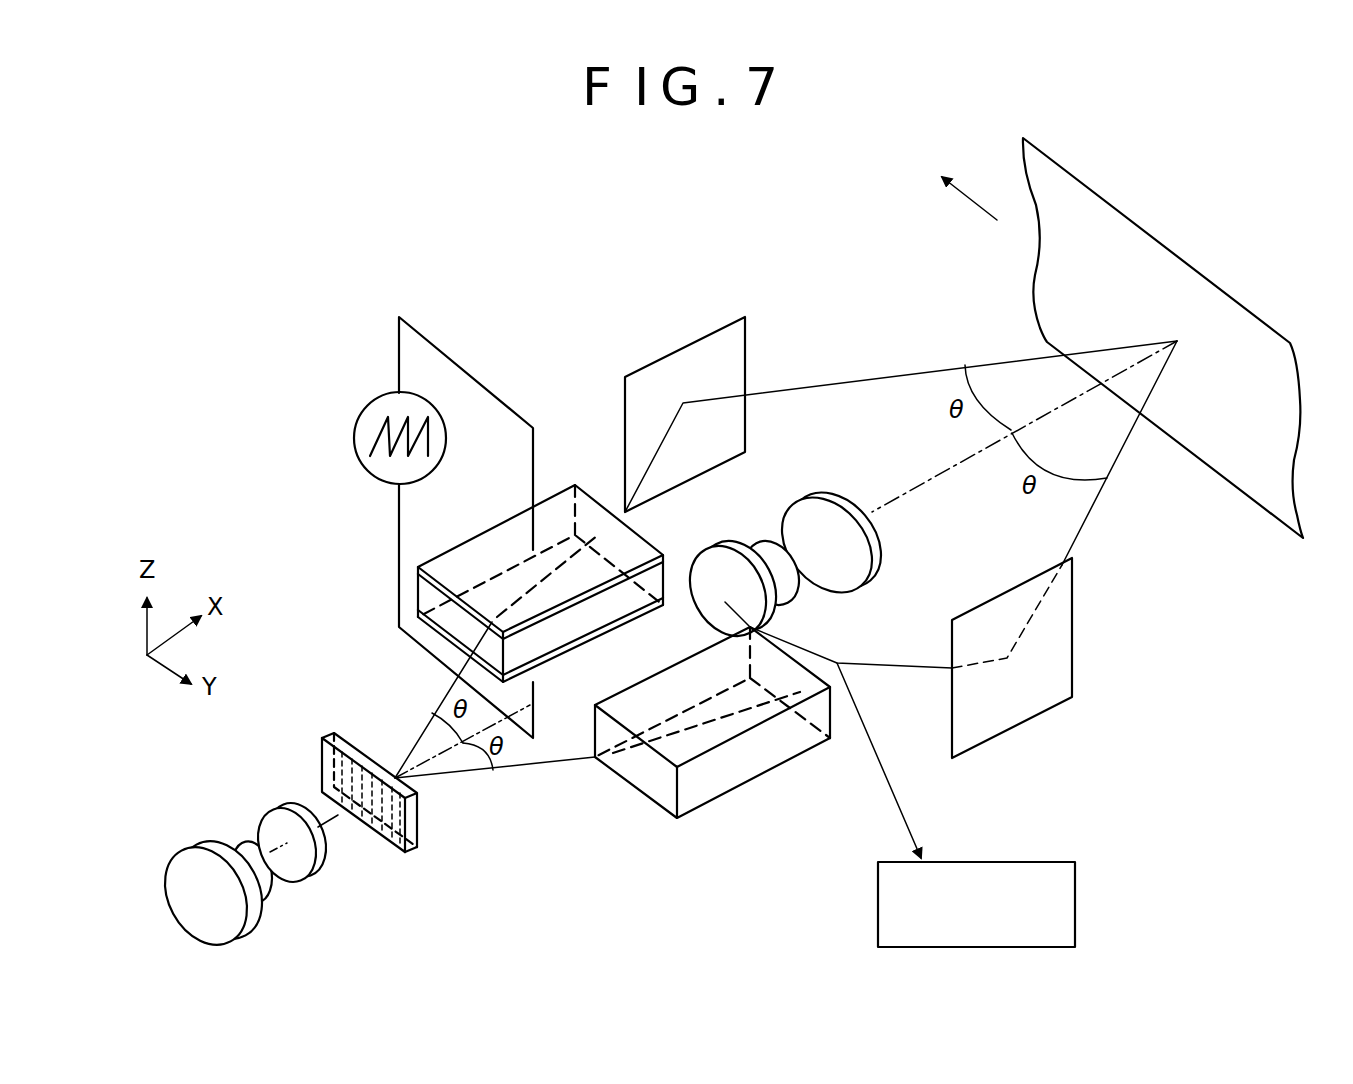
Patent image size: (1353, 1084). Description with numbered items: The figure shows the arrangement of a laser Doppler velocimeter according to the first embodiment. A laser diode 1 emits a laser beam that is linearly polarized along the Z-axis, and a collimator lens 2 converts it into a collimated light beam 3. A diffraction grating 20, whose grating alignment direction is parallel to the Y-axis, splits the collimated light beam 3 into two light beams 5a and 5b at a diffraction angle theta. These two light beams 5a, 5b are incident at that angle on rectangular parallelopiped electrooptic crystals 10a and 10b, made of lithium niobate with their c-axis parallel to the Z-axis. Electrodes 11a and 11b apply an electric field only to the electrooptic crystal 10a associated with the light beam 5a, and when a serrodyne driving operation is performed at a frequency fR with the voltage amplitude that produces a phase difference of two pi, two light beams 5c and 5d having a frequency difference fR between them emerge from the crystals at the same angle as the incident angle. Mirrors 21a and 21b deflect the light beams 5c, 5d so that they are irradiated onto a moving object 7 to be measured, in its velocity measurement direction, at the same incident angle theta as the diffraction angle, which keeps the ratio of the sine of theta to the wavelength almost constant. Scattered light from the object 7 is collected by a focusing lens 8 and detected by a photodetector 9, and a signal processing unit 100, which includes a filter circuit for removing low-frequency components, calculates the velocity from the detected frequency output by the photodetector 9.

The laser diode 1 is at (188, 867).
The collimator lens 2 is at (303, 858).
The collimated light beam 3 is at (327, 815).
The diffraction grating 20 is at (413, 827).
The light beam 5a is at (413, 731).
The light beam 5b is at (517, 773).
The light beam 5c is at (644, 469).
The light beam 5d is at (882, 683).
The electrooptic crystal 10a is at (445, 617).
The electrode 11a is at (420, 568).
The electrode 11b is at (420, 617).
The electrooptic crystal 10b is at (758, 762).
The mirror 21a is at (679, 369).
The mirror 21b is at (1060, 672).
The focusing lens 8 is at (836, 509).
The photodetector 9 is at (731, 573).
The object to be measured 7 is at (1165, 285).
The signal processing unit 100 is at (985, 861).